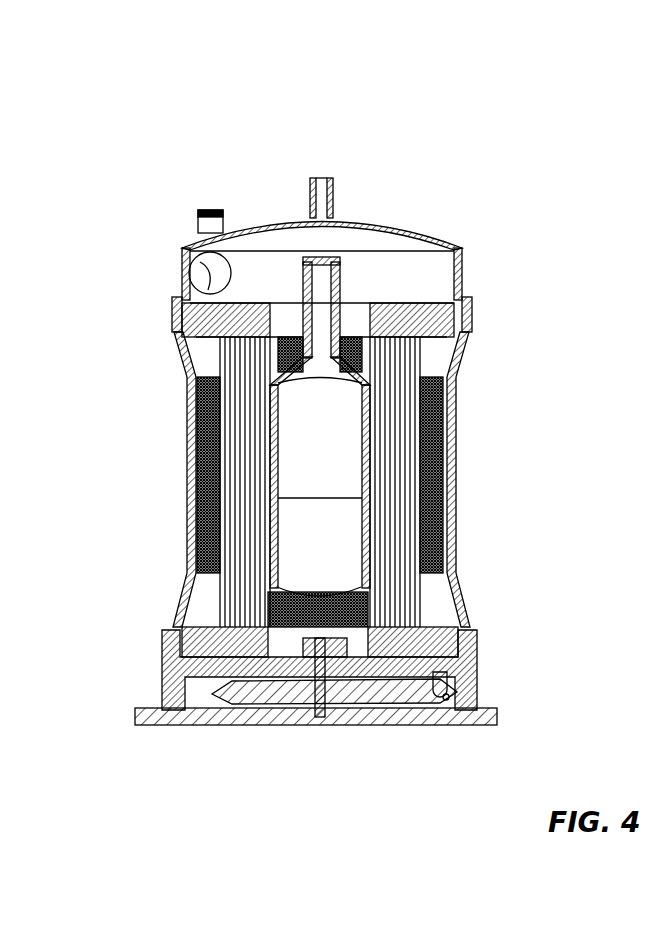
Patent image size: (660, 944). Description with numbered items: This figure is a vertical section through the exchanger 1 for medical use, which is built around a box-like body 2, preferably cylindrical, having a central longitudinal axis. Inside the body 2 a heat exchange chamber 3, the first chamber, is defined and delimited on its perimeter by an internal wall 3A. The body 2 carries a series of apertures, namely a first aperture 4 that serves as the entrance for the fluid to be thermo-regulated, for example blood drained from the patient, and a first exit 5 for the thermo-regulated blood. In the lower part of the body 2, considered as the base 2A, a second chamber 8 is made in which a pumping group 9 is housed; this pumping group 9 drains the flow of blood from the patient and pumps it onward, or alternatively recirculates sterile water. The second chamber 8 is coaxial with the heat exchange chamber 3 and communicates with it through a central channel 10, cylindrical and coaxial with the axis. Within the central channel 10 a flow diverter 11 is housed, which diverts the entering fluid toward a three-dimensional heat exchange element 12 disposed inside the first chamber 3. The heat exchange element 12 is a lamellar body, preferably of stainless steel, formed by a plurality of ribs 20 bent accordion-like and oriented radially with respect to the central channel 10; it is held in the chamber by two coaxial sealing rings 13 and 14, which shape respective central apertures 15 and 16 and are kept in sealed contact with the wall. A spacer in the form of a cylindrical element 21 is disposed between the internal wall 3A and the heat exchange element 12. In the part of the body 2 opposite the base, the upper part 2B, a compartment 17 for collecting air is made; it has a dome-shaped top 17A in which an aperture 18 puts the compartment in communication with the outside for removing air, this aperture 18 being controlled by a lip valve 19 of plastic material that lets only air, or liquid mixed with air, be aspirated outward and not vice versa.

The exchanger 1 is at (22, 177).
The box-like body 2 is at (452, 462).
The base 2A is at (125, 723).
The upper part 2B is at (468, 275).
The heat exchange chamber 3 is at (183, 358).
The internal wall 3A is at (418, 482).
The first aperture 4 is at (188, 267).
The first exit 5 is at (470, 693).
The second chamber 8 is at (207, 710).
The pumping group 9 is at (387, 705).
The central channel 10 is at (275, 558).
The flow diverter 11 is at (345, 445).
The heat exchange element 12 is at (445, 593).
The sealing ring 13 is at (172, 332).
The sealing ring 14 is at (167, 680).
The central aperture 15 is at (358, 320).
The central aperture 16 is at (300, 603).
The compartment 17 is at (353, 237).
The dome-shaped top 17A is at (430, 243).
The aperture 18 is at (337, 188).
The lip valve 19 is at (307, 213).
The ribs 20 is at (473, 318).
The cylindrical element 21 is at (198, 467).